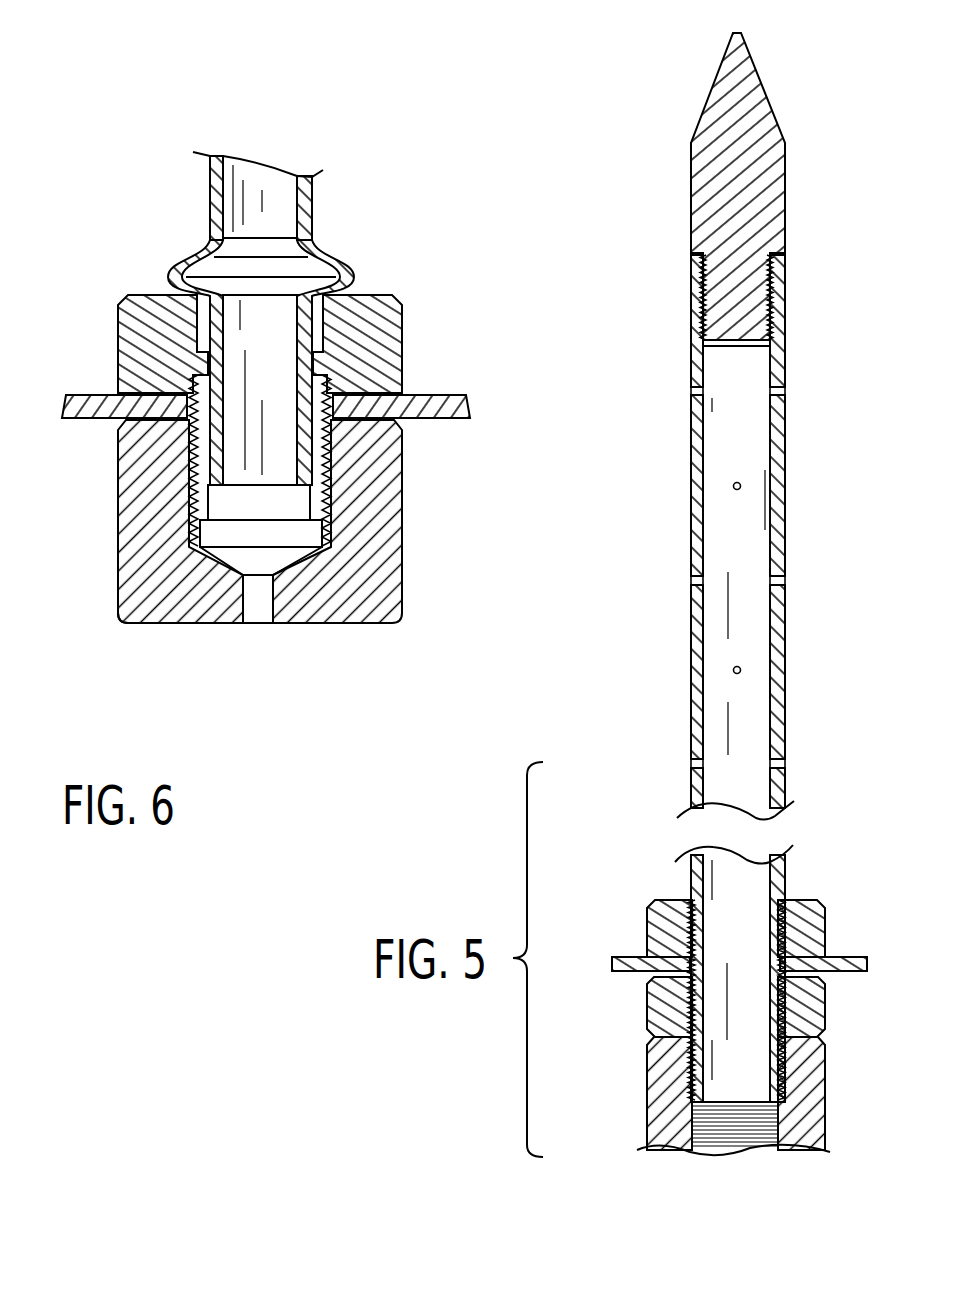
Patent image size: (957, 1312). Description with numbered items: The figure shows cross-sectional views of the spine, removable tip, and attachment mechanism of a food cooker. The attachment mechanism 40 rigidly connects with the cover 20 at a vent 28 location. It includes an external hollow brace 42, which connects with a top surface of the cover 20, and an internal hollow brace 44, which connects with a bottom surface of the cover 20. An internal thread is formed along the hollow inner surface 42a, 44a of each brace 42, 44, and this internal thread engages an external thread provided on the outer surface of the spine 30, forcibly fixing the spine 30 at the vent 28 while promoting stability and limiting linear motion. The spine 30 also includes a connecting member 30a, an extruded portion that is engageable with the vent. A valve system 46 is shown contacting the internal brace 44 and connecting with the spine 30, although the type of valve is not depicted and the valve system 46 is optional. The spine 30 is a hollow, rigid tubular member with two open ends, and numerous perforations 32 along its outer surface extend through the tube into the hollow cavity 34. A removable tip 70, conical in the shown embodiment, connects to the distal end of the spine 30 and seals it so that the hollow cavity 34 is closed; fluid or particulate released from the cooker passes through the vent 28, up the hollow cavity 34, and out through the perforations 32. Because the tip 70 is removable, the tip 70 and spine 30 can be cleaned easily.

In FIG. 6, the cover 20 is at (450, 420).
In FIG. 6, the vent 28 is at (330, 393).
In FIG. 5, the vent 28 is at (780, 957).
In FIG. 5, the spine 30 is at (802, 640).
In FIG. 5, the connecting member 30a is at (678, 902).
In FIG. 5, the perforations 32 is at (680, 747).
In FIG. 5, the hollow cavity 34 is at (770, 514).
In FIG. 5, the attachment mechanism 40 is at (852, 1117).
In FIG. 6, the external hollow brace 42 is at (118, 308).
In FIG. 5, the external hollow brace 42 is at (630, 928).
In FIG. 6, the hollow inner surface of external brace 42a is at (203, 397).
In FIG. 5, the hollow inner surface of external brace 42a is at (780, 893).
In FIG. 6, the internal hollow brace 44 is at (116, 535).
In FIG. 5, the internal hollow brace 44 is at (636, 1018).
In FIG. 6, the hollow inner surface of internal brace 44a is at (190, 510).
In FIG. 5, the hollow inner surface of internal brace 44a is at (780, 1015).
In FIG. 5, the valve system 46 is at (624, 1129).
In FIG. 5, the removable tip 70 is at (760, 87).